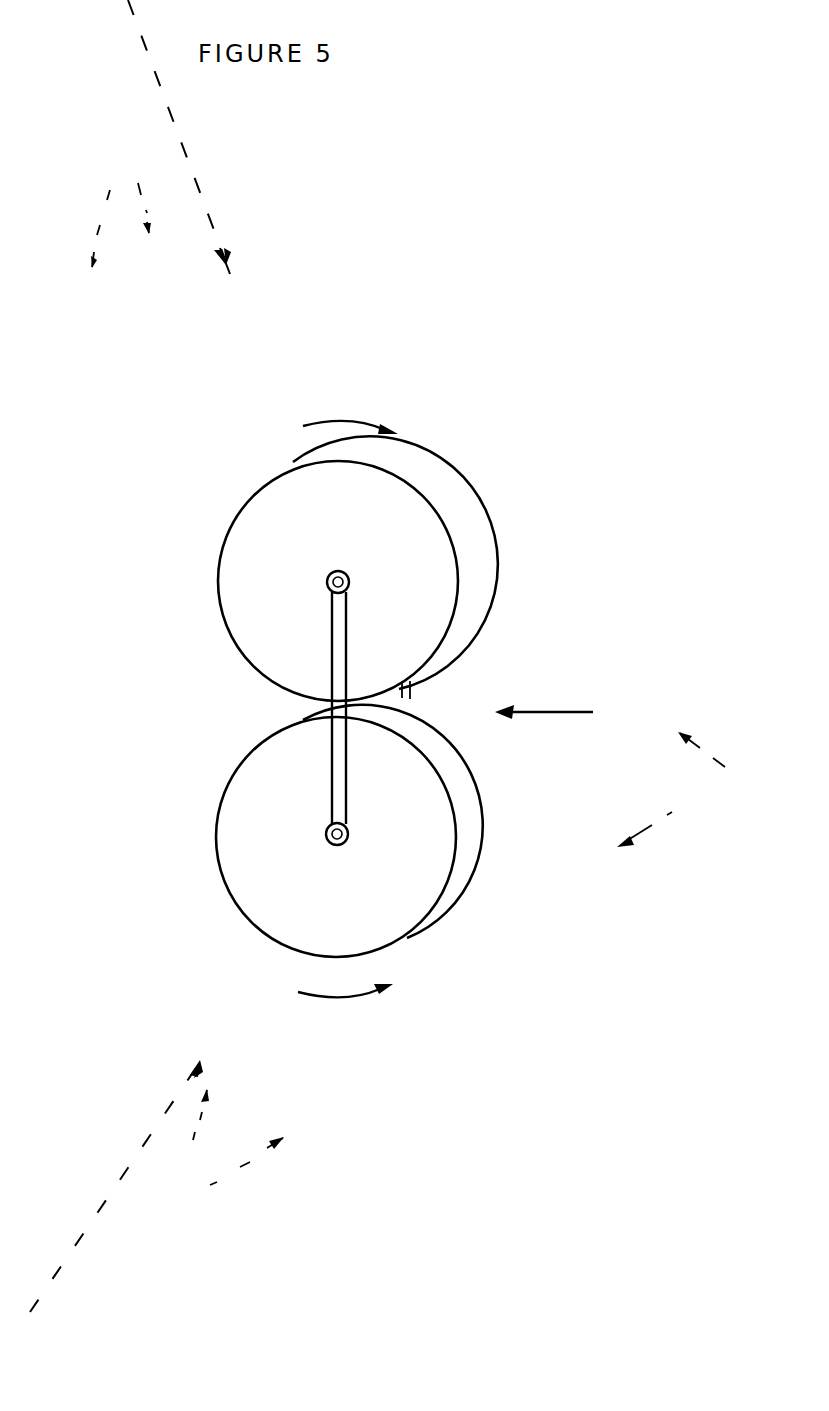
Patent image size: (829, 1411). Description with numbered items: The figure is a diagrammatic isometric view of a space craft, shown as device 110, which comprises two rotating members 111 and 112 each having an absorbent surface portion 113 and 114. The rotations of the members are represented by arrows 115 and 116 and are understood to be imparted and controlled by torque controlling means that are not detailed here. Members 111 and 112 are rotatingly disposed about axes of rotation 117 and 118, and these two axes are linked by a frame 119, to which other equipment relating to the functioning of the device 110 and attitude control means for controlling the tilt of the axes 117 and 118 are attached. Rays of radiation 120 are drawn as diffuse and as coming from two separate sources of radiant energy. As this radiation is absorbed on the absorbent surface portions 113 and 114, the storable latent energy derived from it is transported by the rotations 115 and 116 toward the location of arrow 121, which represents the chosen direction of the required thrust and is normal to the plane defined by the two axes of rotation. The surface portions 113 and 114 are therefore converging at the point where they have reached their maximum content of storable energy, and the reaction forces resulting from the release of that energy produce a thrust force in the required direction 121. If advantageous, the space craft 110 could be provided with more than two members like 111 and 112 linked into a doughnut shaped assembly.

The device 110 is at (321, 513).
The rotating member 111 is at (232, 553).
The rotating member 112 is at (230, 872).
The absorbent surface portion 113 is at (428, 487).
The absorbent surface portion 114 is at (415, 932).
The rotation arrow 115 is at (348, 420).
The rotation arrow 116 is at (323, 1000).
The axis of rotation 117 is at (328, 588).
The axis of rotation 118 is at (327, 838).
The frame 119 is at (340, 708).
The rays of radiation 120 is at (207, 1190).
The thrust direction arrow 121 is at (625, 710).